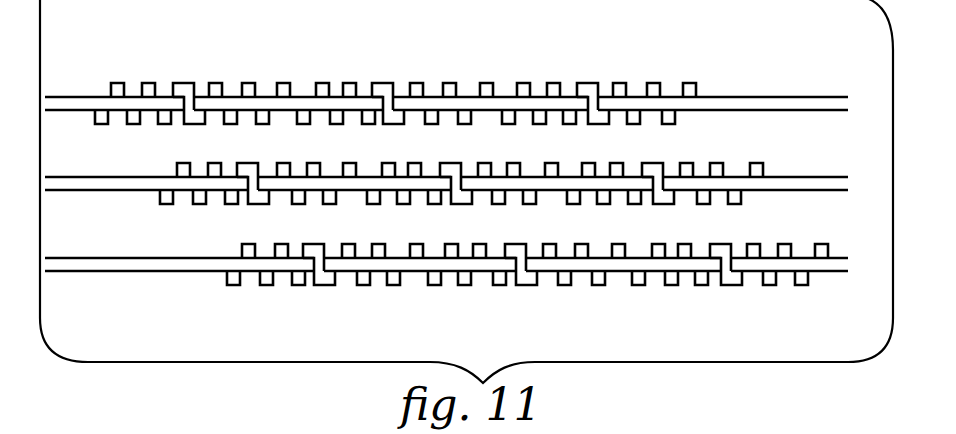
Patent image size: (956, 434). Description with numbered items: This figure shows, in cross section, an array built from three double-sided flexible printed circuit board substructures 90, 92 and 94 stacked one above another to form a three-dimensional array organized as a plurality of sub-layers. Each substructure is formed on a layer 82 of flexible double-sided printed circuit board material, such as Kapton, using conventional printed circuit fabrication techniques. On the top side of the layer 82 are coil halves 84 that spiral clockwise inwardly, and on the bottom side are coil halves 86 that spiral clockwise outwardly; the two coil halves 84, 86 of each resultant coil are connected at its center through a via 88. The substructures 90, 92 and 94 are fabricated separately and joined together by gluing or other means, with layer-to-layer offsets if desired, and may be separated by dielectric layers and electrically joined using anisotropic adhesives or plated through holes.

The layer of flexible double-sided printed circuit board material 82 is at (298, 95).
The coil halves 84 is at (120, 83).
The coil halves 86 is at (100, 124).
The via 88 is at (182, 82).
The substructure 90 is at (446, 85).
The substructure 92 is at (808, 174).
The substructure 94 is at (857, 270).